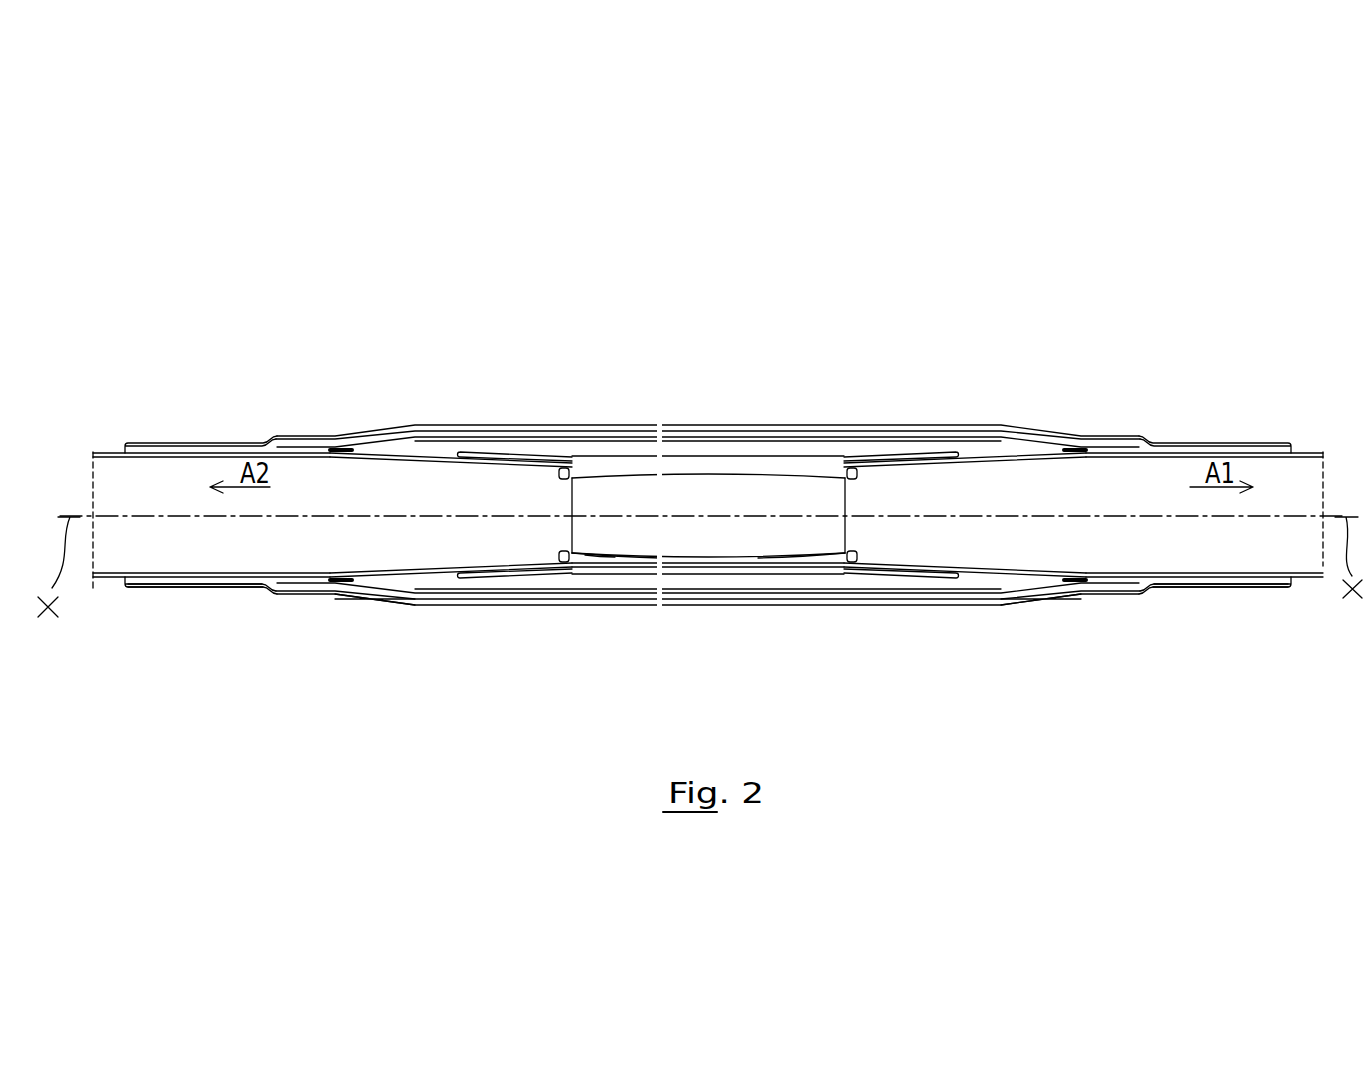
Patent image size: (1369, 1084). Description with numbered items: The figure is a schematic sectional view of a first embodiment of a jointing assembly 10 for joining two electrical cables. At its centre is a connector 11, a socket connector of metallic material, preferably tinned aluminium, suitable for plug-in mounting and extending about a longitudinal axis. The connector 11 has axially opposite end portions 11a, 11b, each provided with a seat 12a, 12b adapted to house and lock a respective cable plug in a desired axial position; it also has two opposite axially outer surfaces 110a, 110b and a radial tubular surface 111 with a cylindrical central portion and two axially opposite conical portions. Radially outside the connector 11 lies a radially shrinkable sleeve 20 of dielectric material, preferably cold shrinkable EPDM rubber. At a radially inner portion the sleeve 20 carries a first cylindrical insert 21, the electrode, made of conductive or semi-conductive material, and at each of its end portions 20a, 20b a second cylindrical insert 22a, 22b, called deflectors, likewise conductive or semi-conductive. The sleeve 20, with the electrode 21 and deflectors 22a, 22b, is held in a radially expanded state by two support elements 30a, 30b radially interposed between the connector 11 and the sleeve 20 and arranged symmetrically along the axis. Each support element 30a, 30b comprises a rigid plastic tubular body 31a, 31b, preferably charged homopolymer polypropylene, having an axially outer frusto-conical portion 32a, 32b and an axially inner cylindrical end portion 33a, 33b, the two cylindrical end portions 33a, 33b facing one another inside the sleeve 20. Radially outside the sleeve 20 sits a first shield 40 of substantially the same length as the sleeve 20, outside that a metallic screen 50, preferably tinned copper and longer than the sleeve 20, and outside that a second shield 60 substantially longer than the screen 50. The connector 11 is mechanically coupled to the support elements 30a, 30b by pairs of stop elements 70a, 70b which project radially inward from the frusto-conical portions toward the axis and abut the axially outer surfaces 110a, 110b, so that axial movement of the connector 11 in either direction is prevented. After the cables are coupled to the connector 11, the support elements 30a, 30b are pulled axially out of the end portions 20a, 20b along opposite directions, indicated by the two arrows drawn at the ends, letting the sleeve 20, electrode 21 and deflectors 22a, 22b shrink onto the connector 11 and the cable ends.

The jointing assembly 10 is at (1012, 290).
The connector 11 is at (758, 574).
The radial tubular surface 111 is at (604, 557).
The end portion 11a is at (831, 574).
The end portion 11b is at (627, 571).
The seat 12a is at (863, 540).
The seat 12b is at (554, 537).
The axially outer surface 110a is at (848, 488).
The axially outer surface 110b is at (568, 496).
The radially shrinkable sleeve 20 is at (702, 448).
The first cylindrical insert 21 is at (768, 460).
The end portion 20a is at (1114, 617).
The end portion 20b is at (303, 614).
The second cylindrical insert 22a is at (1102, 448).
The second cylindrical insert 22b is at (320, 452).
The support element 30a is at (1177, 555).
The support element 30b is at (221, 553).
The rigid tubular body 31a is at (1005, 497).
The rigid tubular body 31b is at (395, 497).
The frusto-conical portion 32a is at (1002, 590).
The frusto-conical portion 32b is at (413, 588).
The cylindrical end portion 33a is at (779, 581).
The cylindrical end portion 33b is at (688, 581).
The first shield 40 is at (582, 432).
The metallic screen 50 is at (606, 432).
The second shield 60 is at (628, 428).
The stop elements 70a is at (858, 474).
The stop elements 70b is at (556, 474).